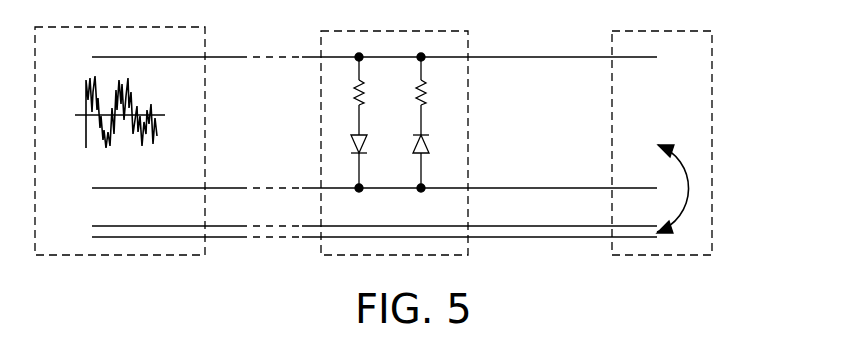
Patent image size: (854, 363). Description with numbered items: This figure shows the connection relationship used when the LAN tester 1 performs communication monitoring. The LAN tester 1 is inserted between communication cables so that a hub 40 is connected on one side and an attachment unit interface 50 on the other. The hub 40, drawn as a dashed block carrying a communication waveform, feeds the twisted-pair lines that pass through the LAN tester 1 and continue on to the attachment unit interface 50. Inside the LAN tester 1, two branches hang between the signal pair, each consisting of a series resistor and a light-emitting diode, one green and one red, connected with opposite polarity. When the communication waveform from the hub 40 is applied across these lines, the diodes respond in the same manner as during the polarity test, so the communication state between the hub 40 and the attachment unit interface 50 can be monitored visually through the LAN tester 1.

The HUB 40 is at (205, 42).
The LAN tester 1 is at (468, 42).
The AUI 50 is at (712, 42).